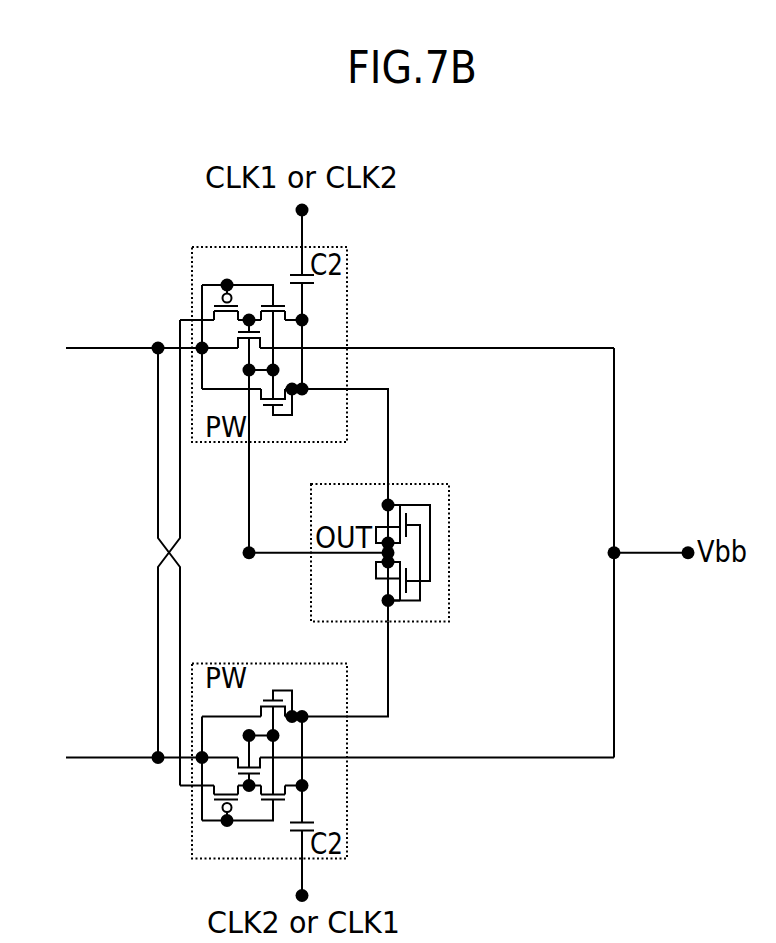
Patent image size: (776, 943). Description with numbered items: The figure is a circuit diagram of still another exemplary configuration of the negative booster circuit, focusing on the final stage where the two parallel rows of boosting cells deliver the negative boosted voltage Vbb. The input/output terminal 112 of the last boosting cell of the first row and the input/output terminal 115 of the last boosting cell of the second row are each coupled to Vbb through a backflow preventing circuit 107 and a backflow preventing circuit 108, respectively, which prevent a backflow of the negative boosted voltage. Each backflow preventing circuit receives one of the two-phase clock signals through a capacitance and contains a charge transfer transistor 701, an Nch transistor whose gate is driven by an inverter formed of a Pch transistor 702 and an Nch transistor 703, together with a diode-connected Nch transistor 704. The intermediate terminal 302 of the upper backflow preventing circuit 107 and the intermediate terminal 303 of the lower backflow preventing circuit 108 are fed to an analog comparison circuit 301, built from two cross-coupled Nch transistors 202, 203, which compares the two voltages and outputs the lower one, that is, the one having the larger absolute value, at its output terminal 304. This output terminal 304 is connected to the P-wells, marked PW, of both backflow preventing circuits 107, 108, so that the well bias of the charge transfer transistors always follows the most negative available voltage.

The backflow preventing circuit 107 is at (347, 277).
The backflow preventing circuit 108 is at (347, 828).
The input/output terminal 112 is at (95, 348).
The input/output terminal 115 is at (95, 758).
The charge transfer transistor 701 is at (248, 345).
The Pch transistor 702 is at (220, 303).
The Nch transistor 703 is at (267, 303).
The diode-connected Nch transistor 704 is at (296, 402).
The analog comparison circuit 301 is at (432, 484).
The intermediate terminal 302 is at (392, 392).
The intermediate terminal 303 is at (392, 714).
The output terminal 304 is at (249, 552).
The Nch transistor 202 is at (405, 517).
The Nch transistor 203 is at (407, 588).